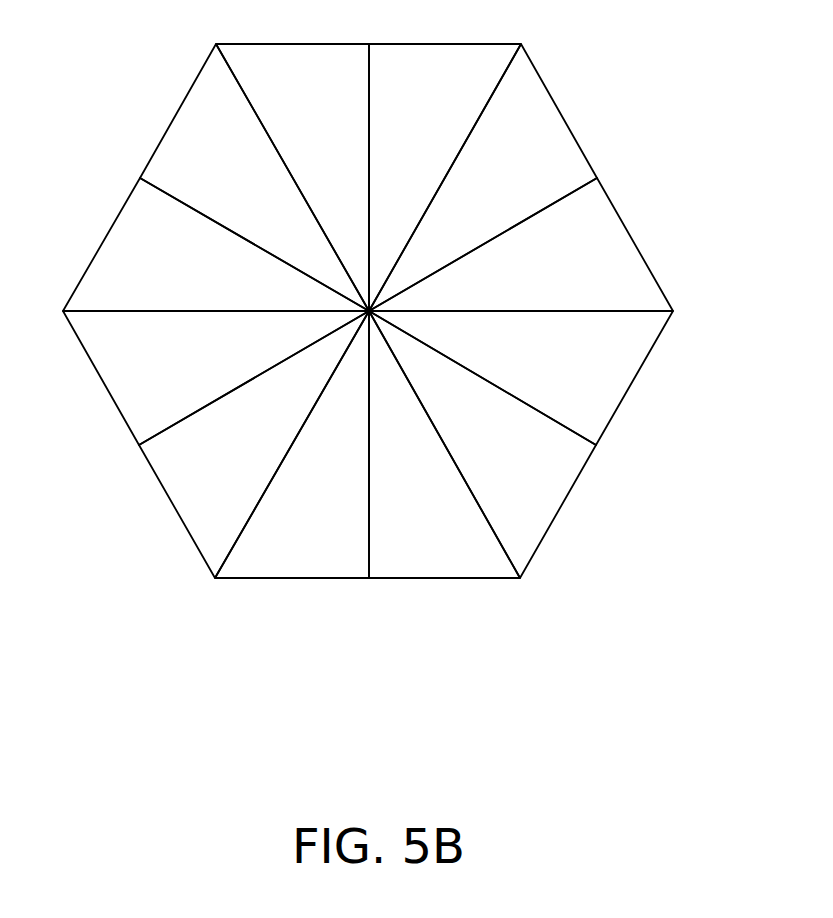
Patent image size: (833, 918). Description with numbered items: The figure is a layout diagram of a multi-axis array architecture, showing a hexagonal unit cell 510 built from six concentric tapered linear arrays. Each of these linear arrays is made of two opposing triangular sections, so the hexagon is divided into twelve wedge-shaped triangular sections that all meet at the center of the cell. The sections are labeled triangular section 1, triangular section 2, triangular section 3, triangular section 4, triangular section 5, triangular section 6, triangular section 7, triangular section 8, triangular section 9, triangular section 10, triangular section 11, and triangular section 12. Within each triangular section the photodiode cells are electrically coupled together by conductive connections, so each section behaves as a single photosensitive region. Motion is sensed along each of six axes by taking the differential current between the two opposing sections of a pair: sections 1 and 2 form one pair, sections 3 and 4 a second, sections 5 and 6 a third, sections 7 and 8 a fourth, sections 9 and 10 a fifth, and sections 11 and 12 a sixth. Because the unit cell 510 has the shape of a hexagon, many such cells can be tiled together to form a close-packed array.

The hexagonal twelve-sector cell layout 510 is at (429, 455).
The triangular section 1 is at (444, 444).
The triangular section 2 is at (292, 177).
The triangular section 3 is at (482, 444).
The triangular section 4 is at (254, 177).
The triangular section 5 is at (521, 378).
The triangular section 6 is at (216, 244).
The triangular section 7 is at (521, 244).
The triangular section 8 is at (216, 378).
The triangular section 9 is at (483, 177).
The triangular section 10 is at (254, 444).
The triangular section 11 is at (445, 177).
The triangular section 12 is at (292, 444).